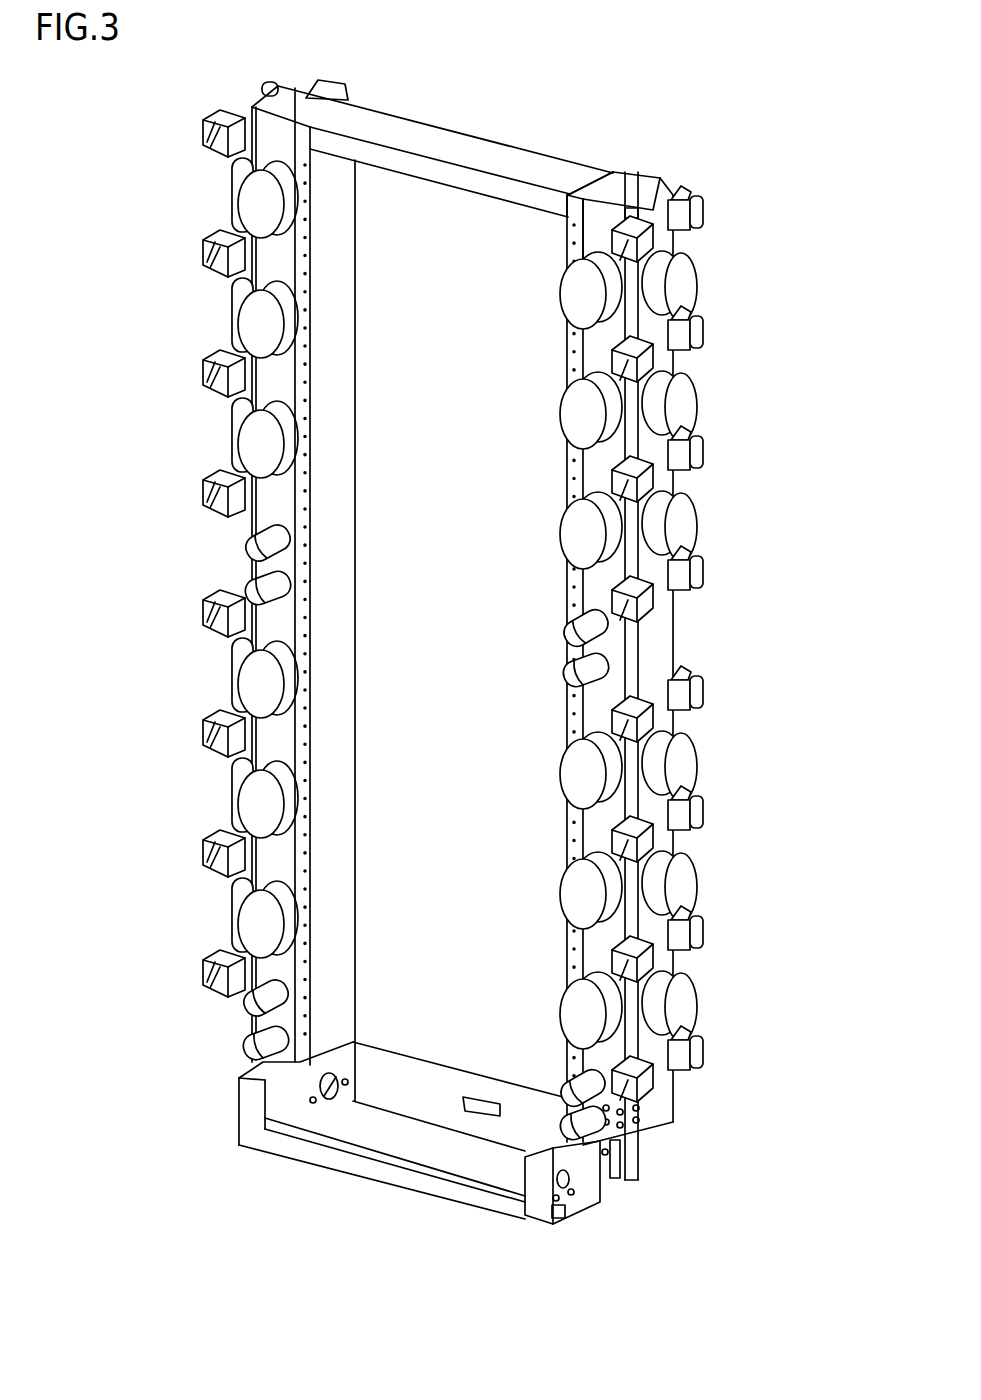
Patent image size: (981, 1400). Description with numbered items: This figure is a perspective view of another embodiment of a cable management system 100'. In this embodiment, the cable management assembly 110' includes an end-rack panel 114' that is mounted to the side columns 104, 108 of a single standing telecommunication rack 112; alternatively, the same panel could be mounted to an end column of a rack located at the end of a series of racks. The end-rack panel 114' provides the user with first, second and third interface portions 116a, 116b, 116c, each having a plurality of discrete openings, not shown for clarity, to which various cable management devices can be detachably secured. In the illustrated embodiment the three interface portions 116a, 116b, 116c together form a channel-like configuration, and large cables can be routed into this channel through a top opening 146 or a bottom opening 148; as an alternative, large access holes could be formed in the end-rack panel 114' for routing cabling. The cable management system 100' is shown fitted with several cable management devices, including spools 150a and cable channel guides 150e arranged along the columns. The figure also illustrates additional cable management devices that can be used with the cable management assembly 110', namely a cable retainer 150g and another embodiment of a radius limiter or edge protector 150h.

The cable management system 100' is at (452, 632).
The telecommunication rack 112 is at (393, 120).
The side column 108 is at (305, 378).
The side column 104 is at (567, 472).
The end-rack panel 114' is at (755, 650).
The cable management assembly 110' is at (384, 612).
The top opening 146 is at (605, 186).
The first interface portion 116a is at (592, 218).
The second interface portion 116b is at (658, 210).
The third interface portion 116c is at (655, 178).
The bottom opening 148 is at (650, 1148).
The spool 150a is at (687, 287).
The cable channel guide 150e is at (650, 478).
The cable retainer 150g is at (703, 694).
The radius limiter or edge protector 150h is at (288, 537).